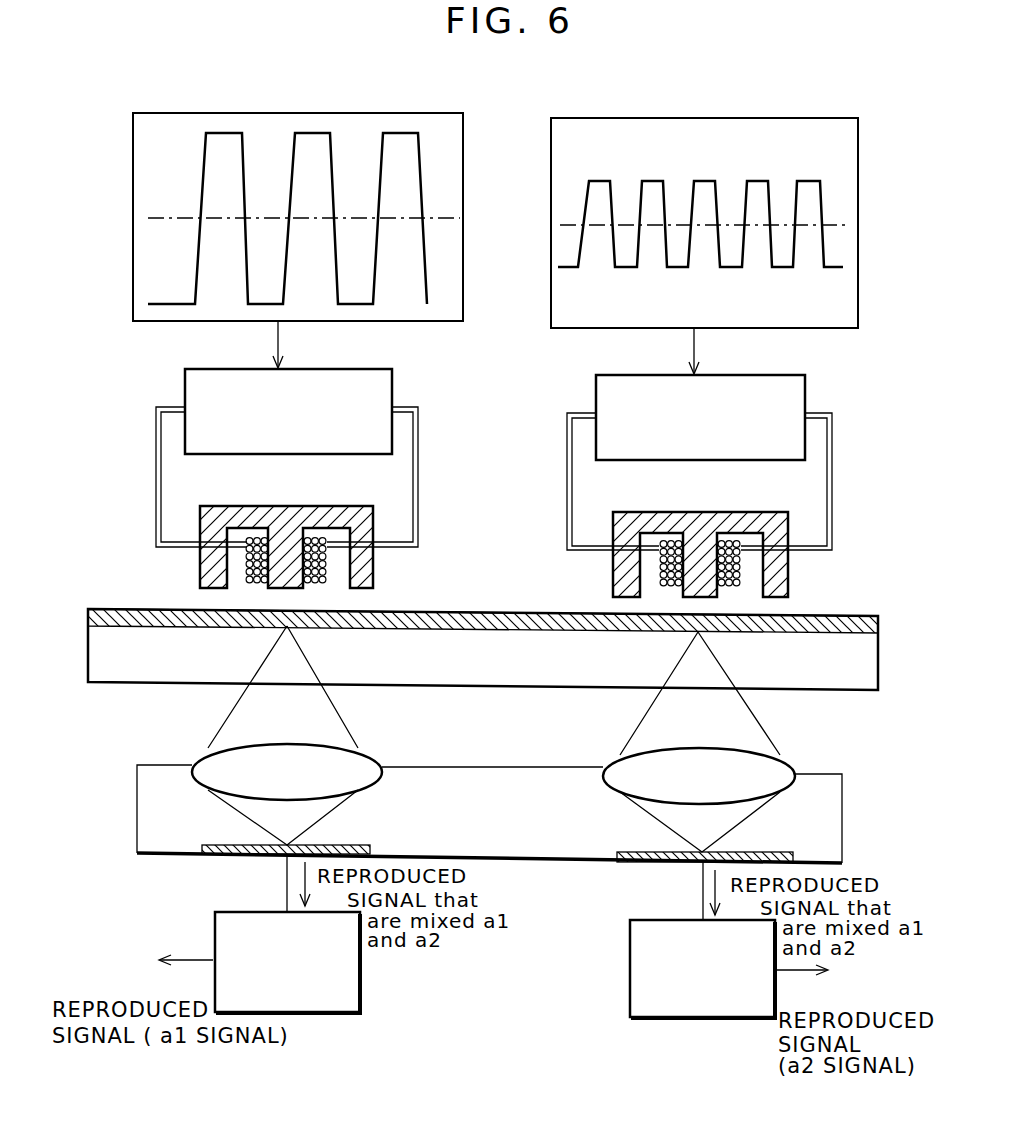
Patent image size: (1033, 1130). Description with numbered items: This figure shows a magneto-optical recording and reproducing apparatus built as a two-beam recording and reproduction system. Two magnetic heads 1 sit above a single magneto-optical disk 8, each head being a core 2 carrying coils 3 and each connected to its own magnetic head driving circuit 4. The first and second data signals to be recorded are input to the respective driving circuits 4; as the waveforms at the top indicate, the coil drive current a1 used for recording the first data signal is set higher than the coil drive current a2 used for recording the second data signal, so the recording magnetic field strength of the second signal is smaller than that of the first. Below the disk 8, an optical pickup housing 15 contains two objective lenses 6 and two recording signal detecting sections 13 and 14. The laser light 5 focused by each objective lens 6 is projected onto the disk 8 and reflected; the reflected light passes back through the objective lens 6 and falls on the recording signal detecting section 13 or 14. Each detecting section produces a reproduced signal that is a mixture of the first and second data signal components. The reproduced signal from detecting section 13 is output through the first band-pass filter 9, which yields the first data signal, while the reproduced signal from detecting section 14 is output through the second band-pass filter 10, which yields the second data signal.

The magnetic head 1 is at (491, 559).
The magnetic core 2 is at (293, 582).
The coil 3 is at (257, 590).
The magnetic head driving circuit 4 is at (392, 395).
The laser light 5 is at (357, 735).
The objective lens 6 is at (380, 782).
The magneto-optical disk 8 is at (800, 700).
The first band-pass filter 9 is at (360, 963).
The second band-pass filter 10 is at (630, 970).
The recording signal detecting section 13 is at (358, 848).
The recording signal detecting section 14 is at (617, 855).
The optical pickup housing 15 is at (137, 785).
The coil drive current a1 is at (424, 186).
The coil drive current a2 is at (822, 200).